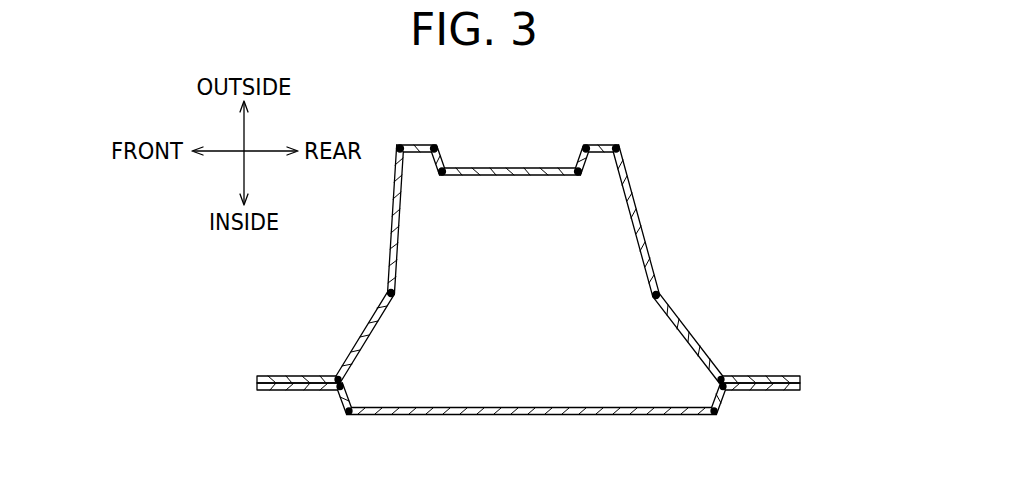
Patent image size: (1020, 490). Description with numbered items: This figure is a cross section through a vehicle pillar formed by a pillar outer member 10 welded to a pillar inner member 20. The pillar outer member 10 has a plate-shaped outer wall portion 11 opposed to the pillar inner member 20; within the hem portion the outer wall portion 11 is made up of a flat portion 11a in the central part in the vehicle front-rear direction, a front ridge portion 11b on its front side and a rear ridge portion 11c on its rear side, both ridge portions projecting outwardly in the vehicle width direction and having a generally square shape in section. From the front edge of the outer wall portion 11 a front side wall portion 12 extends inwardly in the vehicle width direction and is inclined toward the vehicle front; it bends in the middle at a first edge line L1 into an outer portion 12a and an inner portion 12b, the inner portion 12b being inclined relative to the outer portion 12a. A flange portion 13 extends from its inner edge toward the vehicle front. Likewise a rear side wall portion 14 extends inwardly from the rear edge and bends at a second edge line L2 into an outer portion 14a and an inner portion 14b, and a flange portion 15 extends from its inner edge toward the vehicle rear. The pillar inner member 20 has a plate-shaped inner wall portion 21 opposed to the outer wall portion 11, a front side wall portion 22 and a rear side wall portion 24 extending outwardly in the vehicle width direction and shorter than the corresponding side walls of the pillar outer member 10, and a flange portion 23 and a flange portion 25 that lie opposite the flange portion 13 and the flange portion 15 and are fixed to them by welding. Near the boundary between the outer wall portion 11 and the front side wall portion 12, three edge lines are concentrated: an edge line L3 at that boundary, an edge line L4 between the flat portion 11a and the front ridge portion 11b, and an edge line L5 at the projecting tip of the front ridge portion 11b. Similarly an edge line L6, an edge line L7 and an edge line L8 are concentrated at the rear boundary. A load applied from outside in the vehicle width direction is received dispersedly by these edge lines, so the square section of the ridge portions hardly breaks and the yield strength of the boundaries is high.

The pillar outer member 10 is at (632, 148).
The outer wall portion 11 is at (583, 103).
The flat portion 11a is at (505, 167).
The front ridge portion 11b is at (421, 143).
The rear ridge portion 11c is at (594, 144).
The front side wall portion 12 is at (295, 248).
The outer portion 12a is at (387, 246).
The inner portion 12b is at (360, 330).
The flange portion 13 is at (272, 373).
The rear side wall portion 14 is at (757, 233).
The outer portion 14a is at (646, 242).
The inner portion 14b is at (690, 330).
The flange portion 15 is at (777, 373).
The pillar inner member 20 is at (654, 431).
The inner wall portion 21 is at (500, 417).
The front side wall portion 22 is at (337, 405).
The flange portion 23 is at (272, 392).
The rear side wall portion 24 is at (725, 402).
The flange portion 25 is at (772, 392).
The first edge line L1 is at (397, 302).
The second edge line L2 is at (653, 298).
The edge line L3 is at (400, 145).
The edge line L4 is at (441, 174).
The edge line L5 is at (426, 154).
The edge line L6 is at (616, 145).
The edge line L7 is at (578, 175).
The edge line L8 is at (588, 154).